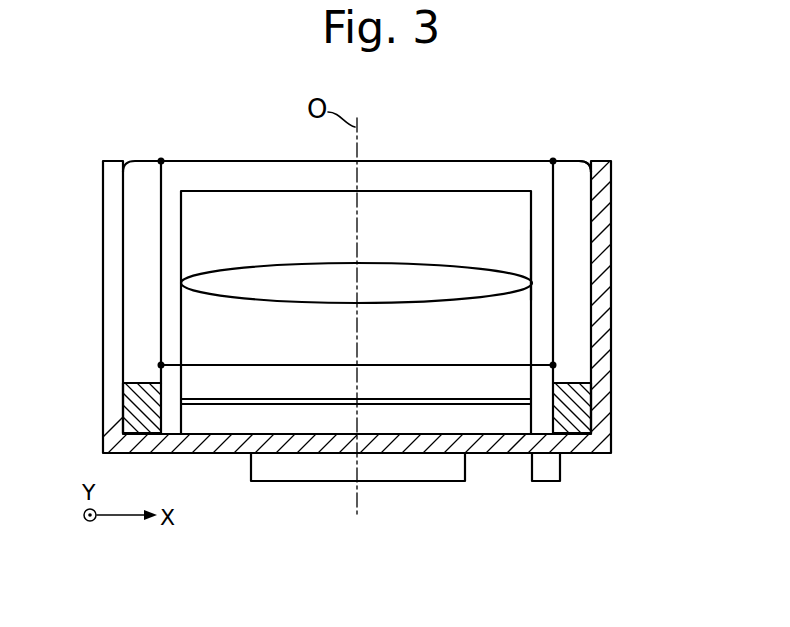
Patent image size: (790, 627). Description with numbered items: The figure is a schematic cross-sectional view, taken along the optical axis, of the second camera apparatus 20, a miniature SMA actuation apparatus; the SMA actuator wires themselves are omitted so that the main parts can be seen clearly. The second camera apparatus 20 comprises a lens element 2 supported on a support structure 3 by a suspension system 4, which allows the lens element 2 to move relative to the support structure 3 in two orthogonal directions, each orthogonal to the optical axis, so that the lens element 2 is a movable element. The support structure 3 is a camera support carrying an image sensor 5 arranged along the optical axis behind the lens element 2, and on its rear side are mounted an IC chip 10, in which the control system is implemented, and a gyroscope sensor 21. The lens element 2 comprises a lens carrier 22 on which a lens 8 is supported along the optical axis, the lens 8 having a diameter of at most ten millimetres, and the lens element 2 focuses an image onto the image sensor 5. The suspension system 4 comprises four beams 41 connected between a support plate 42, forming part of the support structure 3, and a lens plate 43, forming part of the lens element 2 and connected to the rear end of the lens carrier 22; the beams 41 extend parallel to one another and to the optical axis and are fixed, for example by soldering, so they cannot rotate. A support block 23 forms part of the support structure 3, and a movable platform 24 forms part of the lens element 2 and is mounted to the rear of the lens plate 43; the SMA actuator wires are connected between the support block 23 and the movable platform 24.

The lens element 2 is at (480, 212).
The support structure 3 is at (598, 237).
The suspension system 4 is at (553, 313).
The image sensor 5 is at (492, 425).
The lens 8 is at (418, 277).
The IC chip 10 is at (418, 472).
The second camera apparatus 20 is at (238, 144).
The gyroscope sensor 21 is at (545, 473).
The lens carrier 22 is at (531, 253).
The support block 23 is at (578, 421).
The movable platform 24 is at (530, 371).
The beams 41 is at (553, 177).
The support plate 42 is at (562, 158).
The lens plate 43 is at (553, 365).